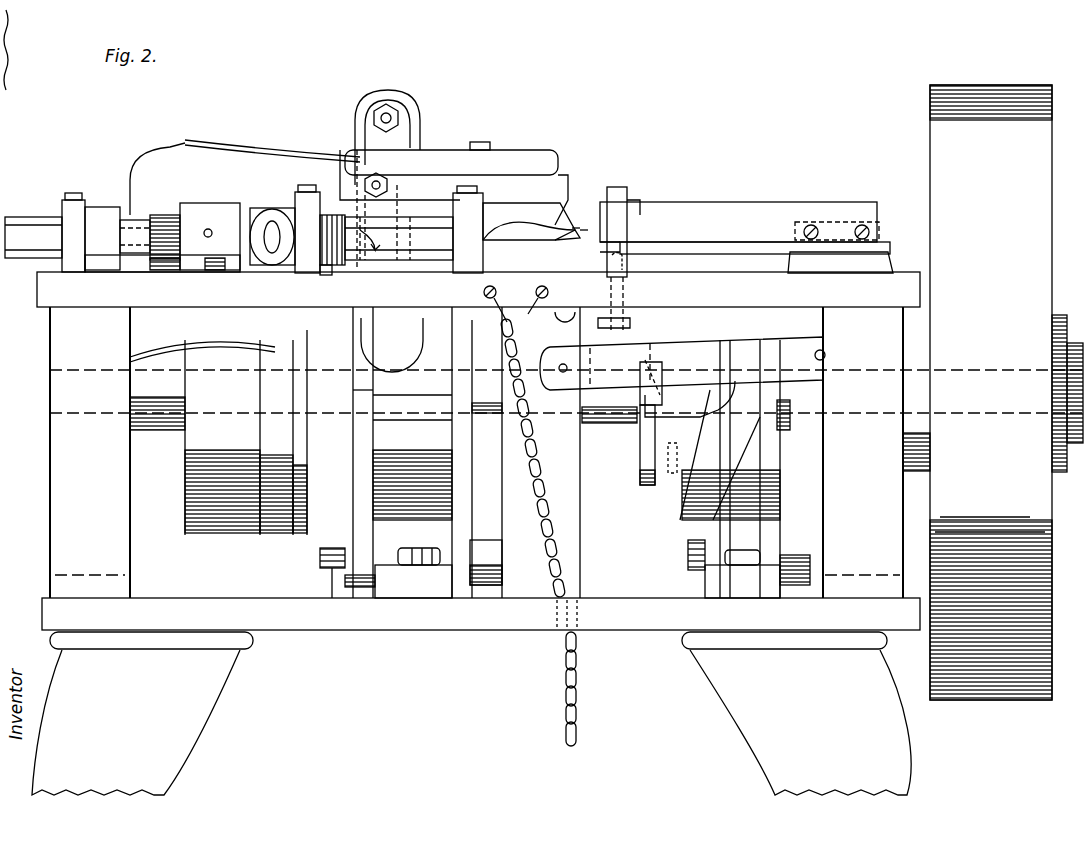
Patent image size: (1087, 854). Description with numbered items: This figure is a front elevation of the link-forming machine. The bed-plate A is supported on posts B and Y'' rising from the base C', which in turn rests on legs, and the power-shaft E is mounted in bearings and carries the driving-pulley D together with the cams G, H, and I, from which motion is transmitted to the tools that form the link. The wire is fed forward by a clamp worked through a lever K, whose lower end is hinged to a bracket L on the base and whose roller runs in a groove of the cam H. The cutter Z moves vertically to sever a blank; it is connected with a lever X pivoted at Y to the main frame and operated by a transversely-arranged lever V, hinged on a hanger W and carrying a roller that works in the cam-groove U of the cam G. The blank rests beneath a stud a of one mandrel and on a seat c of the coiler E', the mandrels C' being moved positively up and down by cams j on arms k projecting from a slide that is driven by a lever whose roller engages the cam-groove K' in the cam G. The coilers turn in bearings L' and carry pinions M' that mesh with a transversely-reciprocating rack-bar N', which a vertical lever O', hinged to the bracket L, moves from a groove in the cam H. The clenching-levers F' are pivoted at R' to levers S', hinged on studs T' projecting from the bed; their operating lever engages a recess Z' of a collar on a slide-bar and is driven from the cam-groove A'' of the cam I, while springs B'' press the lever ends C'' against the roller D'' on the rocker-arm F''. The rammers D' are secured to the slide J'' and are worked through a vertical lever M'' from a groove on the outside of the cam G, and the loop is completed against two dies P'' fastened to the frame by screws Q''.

The bed-plate A is at (162, 278).
The cam-groove A'' is at (283, 457).
The post B is at (538, 532).
The springs B'' is at (245, 249).
The mandrels C' is at (478, 458).
The ends of clenching-levers C'' is at (157, 179).
The driving-pulley D is at (1006, 392).
The rammers D' is at (746, 237).
The roller D'' is at (204, 236).
The power-shaft E is at (425, 415).
The coiler E' is at (399, 243).
The clenching-levers F' is at (454, 161).
The rocker-arm F'' is at (62, 246).
The cam G is at (731, 468).
The cam H is at (406, 419).
The cam I is at (195, 465).
The slide J'' is at (851, 219).
The lever K is at (482, 441).
The cam-groove K' is at (712, 455).
The bracket L is at (354, 564).
The bearings L' is at (412, 217).
The pinions M' is at (347, 257).
The vertical lever M'' is at (727, 427).
The rack-bar N' is at (386, 243).
The vertical lever O' is at (346, 431).
The dies P'' is at (540, 174).
The screws Q'' is at (511, 315).
The pivot R' is at (414, 181).
The levers S' is at (409, 133).
The studs T' is at (387, 115).
The cam-groove U is at (668, 490).
The transversely-arranged lever V is at (655, 392).
The hanger W is at (680, 310).
The lever X is at (690, 396).
The pivot Y is at (703, 351).
The post Y'' is at (490, 452).
The cutter Z is at (548, 312).
The recess Z' is at (175, 258).
The studs a is at (587, 228).
The seat c is at (577, 225).
The cams j is at (503, 258).
The arms k is at (635, 252).